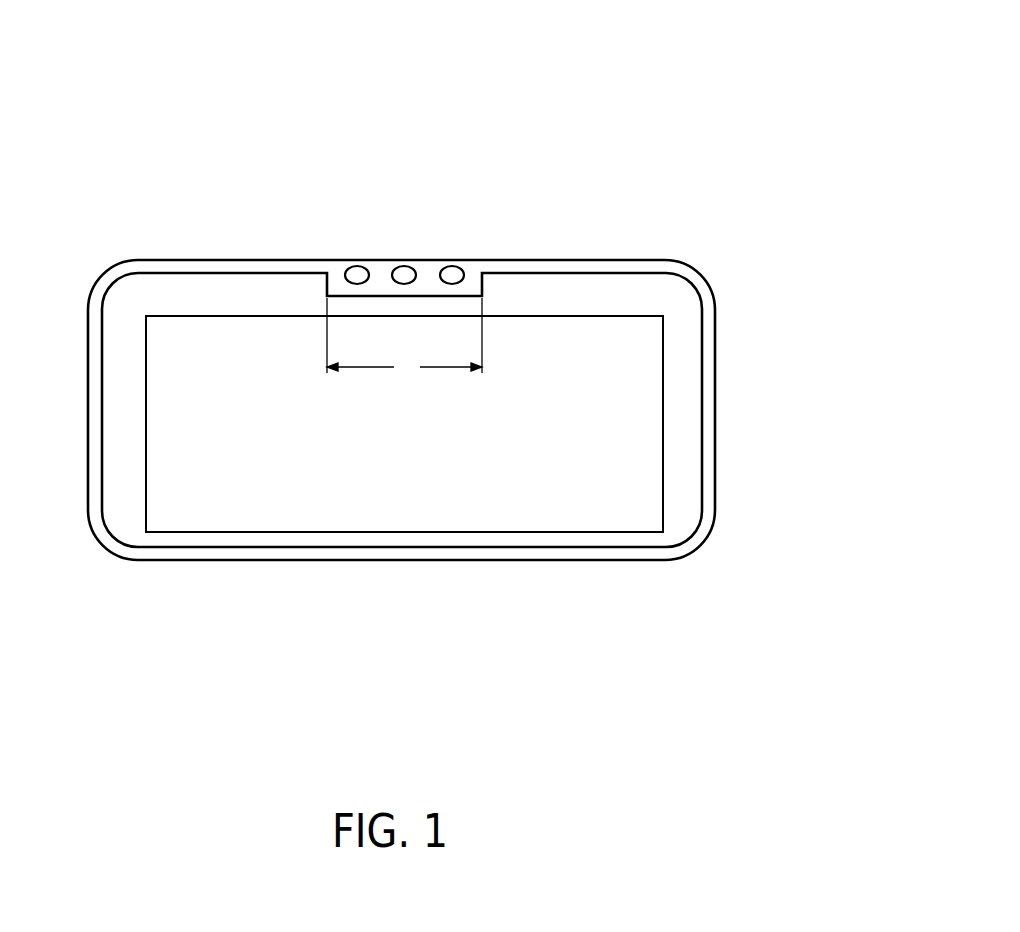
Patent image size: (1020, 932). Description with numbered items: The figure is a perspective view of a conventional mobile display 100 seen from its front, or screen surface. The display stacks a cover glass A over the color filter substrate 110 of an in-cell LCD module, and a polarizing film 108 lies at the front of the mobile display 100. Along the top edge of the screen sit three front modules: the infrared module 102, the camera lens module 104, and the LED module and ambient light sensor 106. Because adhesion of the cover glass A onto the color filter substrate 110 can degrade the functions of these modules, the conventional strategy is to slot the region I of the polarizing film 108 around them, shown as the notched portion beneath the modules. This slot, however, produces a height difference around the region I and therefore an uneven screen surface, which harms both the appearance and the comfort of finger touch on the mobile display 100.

The mobile display 100 is at (639, 37).
The cover glass A is at (198, 327).
The infrared module 102 is at (357, 266).
The camera lens module 104 is at (404, 266).
The LED module and ambient light sensor 106 is at (454, 266).
The polarizing film 108 is at (588, 293).
The color filter substrate 110 is at (708, 392).
The region I is at (404, 335).